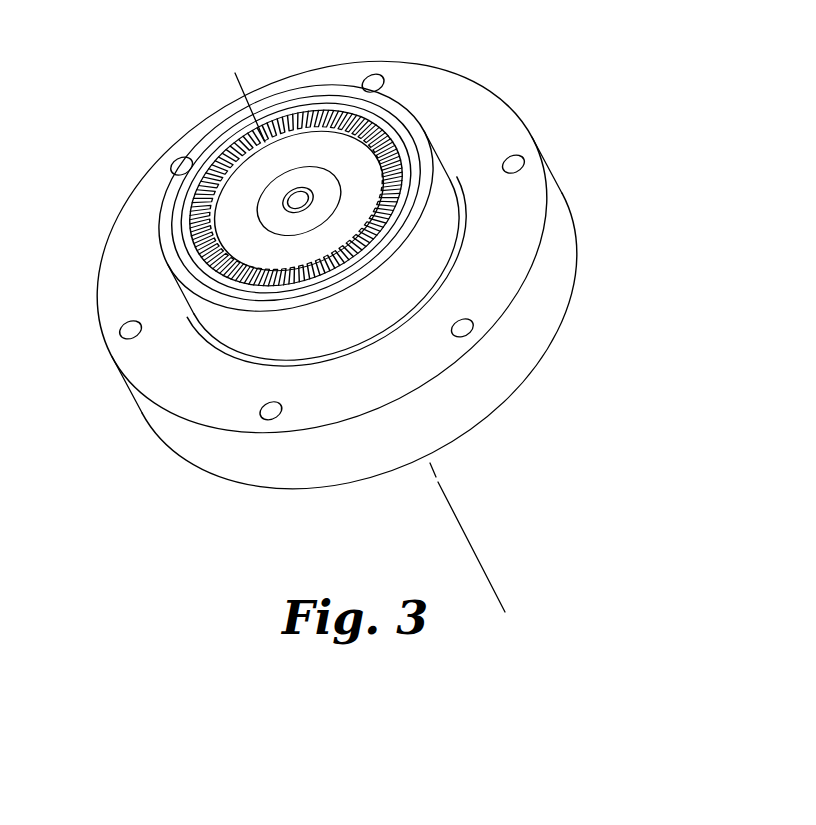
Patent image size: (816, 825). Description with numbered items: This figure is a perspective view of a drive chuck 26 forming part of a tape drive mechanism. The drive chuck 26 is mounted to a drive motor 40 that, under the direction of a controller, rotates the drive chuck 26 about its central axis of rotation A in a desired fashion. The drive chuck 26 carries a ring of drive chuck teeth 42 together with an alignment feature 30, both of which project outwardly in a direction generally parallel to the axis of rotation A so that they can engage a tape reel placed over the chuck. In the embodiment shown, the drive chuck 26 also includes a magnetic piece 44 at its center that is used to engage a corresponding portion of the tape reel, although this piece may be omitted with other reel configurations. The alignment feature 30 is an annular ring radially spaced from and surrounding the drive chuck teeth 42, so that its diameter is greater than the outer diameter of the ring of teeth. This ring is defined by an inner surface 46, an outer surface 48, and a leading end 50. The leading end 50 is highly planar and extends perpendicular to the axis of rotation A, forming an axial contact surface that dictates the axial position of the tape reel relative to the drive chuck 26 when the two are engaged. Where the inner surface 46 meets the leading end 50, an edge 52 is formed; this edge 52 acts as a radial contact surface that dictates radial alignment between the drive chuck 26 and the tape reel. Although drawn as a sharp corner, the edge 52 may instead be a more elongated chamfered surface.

The drive chuck 26 is at (562, 86).
The alignment feature 30 is at (196, 326).
The drive motor 40 is at (176, 442).
The drive chuck teeth 42 is at (300, 110).
The magnetic piece 44 is at (224, 204).
The inner surface 46 is at (193, 143).
The outer surface 48 is at (327, 332).
The leading end 50 is at (217, 123).
The edge 52 is at (298, 200).
The axis of rotation A is at (453, 507).